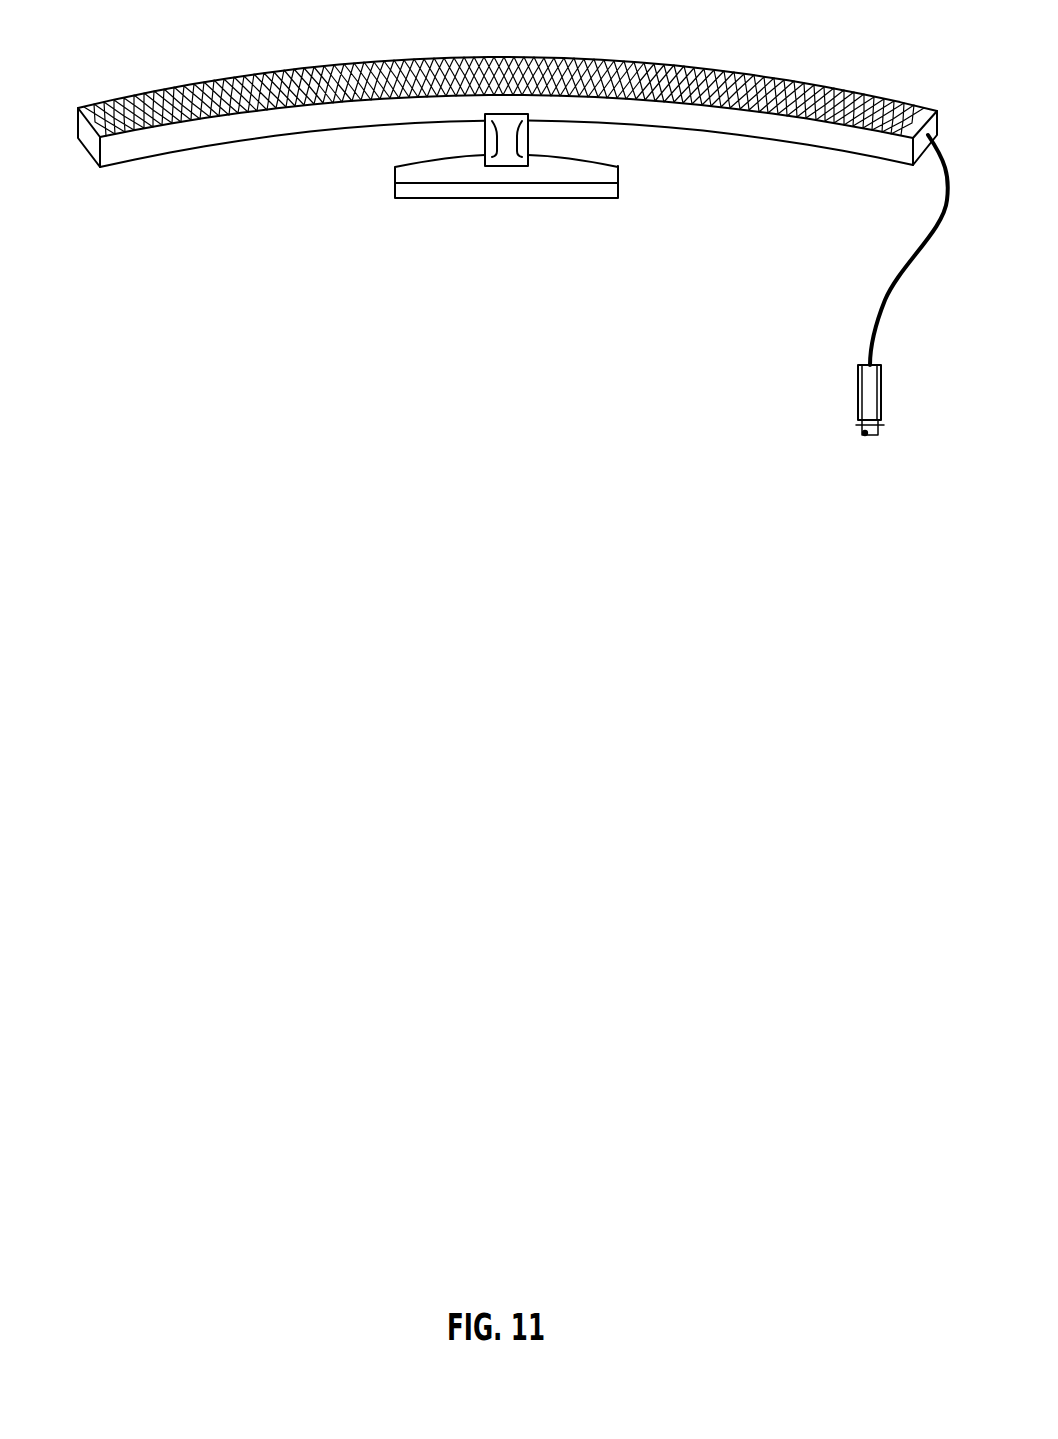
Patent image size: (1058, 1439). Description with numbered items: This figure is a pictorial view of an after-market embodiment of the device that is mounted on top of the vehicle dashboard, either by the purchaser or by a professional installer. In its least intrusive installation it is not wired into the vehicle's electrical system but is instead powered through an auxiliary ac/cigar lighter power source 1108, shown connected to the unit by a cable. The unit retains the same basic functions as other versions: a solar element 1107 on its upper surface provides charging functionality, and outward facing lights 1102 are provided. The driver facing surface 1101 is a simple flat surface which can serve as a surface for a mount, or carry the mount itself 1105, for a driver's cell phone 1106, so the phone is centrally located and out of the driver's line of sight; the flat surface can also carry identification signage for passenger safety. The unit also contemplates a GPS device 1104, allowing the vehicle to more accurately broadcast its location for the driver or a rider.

The driver facing surface 1101 is at (273, 123).
The outward facing lights 1102 is at (152, 75).
The GPS device 1104 is at (775, 123).
The mount 1105 is at (505, 128).
The cell phone 1106 is at (515, 113).
The solar element 1107 is at (752, 80).
The ac/cigar lighter power source 1108 is at (902, 285).